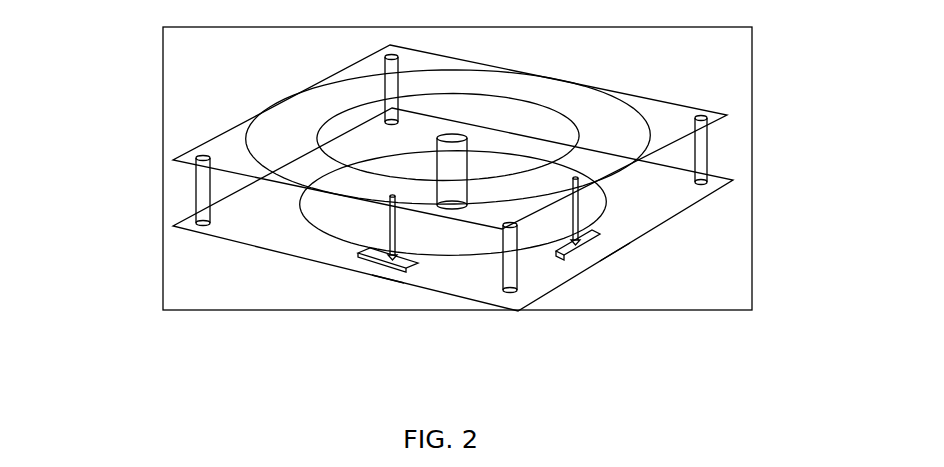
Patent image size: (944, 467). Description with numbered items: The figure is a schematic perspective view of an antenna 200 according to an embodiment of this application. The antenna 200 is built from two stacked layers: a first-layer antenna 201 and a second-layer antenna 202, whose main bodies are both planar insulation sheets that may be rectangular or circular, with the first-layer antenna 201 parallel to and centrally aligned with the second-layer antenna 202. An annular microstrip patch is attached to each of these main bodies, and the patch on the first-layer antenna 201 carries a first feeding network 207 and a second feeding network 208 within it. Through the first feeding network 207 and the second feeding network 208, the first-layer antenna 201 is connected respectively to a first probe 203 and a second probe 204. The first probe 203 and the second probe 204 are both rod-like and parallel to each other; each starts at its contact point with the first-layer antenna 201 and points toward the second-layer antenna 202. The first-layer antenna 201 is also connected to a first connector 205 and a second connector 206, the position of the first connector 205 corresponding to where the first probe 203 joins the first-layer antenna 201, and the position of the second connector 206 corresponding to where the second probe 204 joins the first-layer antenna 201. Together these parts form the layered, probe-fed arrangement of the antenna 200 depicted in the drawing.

The antenna 200 is at (163, 165).
The first-layer antenna 201 is at (680, 106).
The second-layer antenna 202 is at (720, 178).
The first probe 203 is at (579, 214).
The second probe 204 is at (387, 226).
The first connector 205 is at (615, 253).
The second connector 206 is at (388, 281).
The first feeding network 207 is at (566, 251).
The second feeding network 208 is at (420, 264).